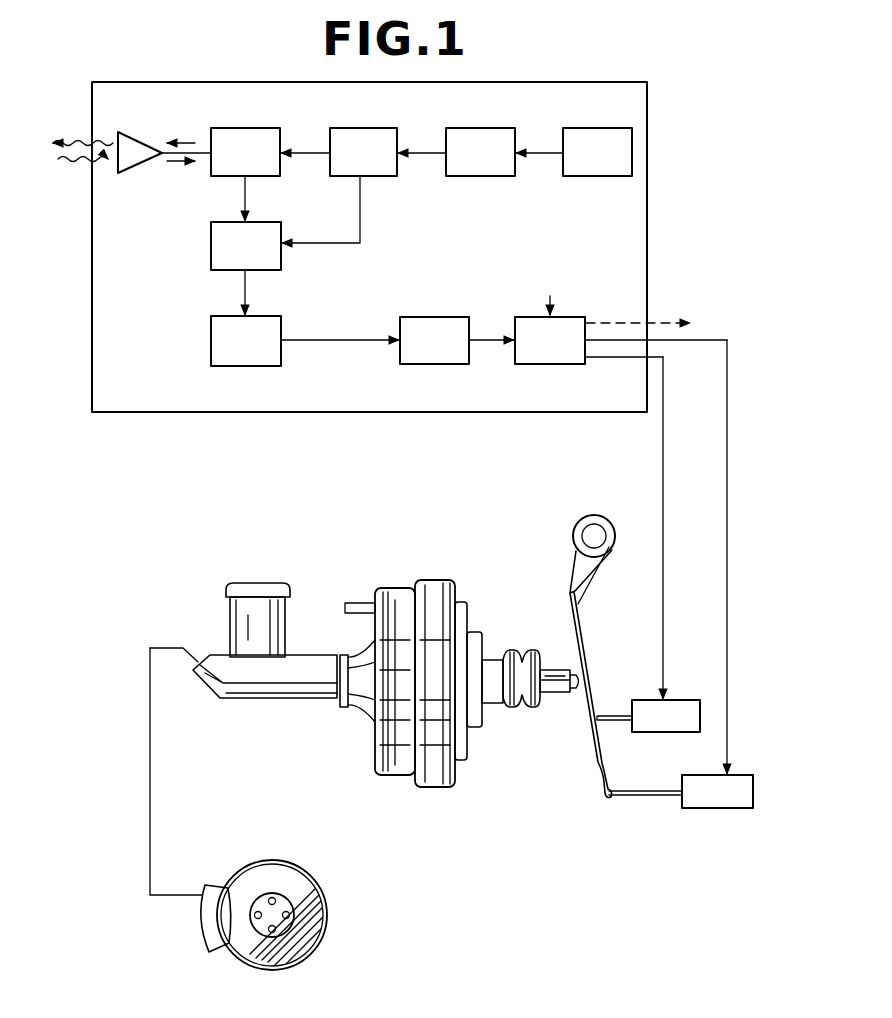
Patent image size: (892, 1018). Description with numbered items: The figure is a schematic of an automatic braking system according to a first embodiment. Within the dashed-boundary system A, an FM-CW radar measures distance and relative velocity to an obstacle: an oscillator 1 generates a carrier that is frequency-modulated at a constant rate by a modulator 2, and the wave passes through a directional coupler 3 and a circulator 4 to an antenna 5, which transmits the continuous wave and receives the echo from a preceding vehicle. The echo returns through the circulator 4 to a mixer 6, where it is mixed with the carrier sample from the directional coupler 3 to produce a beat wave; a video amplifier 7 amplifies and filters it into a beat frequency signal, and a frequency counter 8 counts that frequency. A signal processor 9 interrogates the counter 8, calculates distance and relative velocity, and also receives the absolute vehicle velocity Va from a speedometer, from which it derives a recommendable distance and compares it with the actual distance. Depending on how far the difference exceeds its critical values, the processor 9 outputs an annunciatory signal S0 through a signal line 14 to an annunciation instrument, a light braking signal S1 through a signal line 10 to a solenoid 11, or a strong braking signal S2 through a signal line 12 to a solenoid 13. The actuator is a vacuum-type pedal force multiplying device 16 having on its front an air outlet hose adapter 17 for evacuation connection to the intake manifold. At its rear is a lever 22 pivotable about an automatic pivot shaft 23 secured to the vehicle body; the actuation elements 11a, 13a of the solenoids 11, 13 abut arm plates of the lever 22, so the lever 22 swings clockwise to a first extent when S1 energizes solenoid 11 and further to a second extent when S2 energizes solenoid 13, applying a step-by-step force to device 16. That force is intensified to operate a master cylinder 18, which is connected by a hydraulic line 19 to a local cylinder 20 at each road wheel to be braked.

The system A is at (603, 80).
The oscillator 1 is at (580, 138).
The modulator 2 is at (470, 136).
The directional coupler 3 is at (362, 136).
The circulator 4 is at (243, 136).
The antenna 5 is at (128, 142).
The mixer 6 is at (210, 244).
The video amplifier 7 is at (214, 344).
The frequency counter 8 is at (420, 328).
The signal processor 9 is at (535, 358).
The absolute velocity Va is at (556, 288).
The annunciatory signal S0 is at (666, 322).
The light braking signal S1 is at (607, 358).
The strong braking signal S2 is at (728, 362).
The signal line 10 is at (662, 471).
The solenoid 11 is at (675, 700).
The actuation element 11a is at (610, 716).
The signal line 12 is at (728, 452).
The solenoid 13 is at (742, 775).
The actuation element 13a is at (668, 772).
The signal line 14 is at (658, 323).
The pedal force multiplying device 16 is at (432, 588).
The air outlet hose adapter 17 is at (357, 603).
The master cylinder 18 is at (260, 683).
The hydraulic line 19 is at (150, 795).
The local cylinder 20 is at (208, 929).
The lever 22 is at (588, 596).
The automatic pivot shaft 23 is at (593, 533).